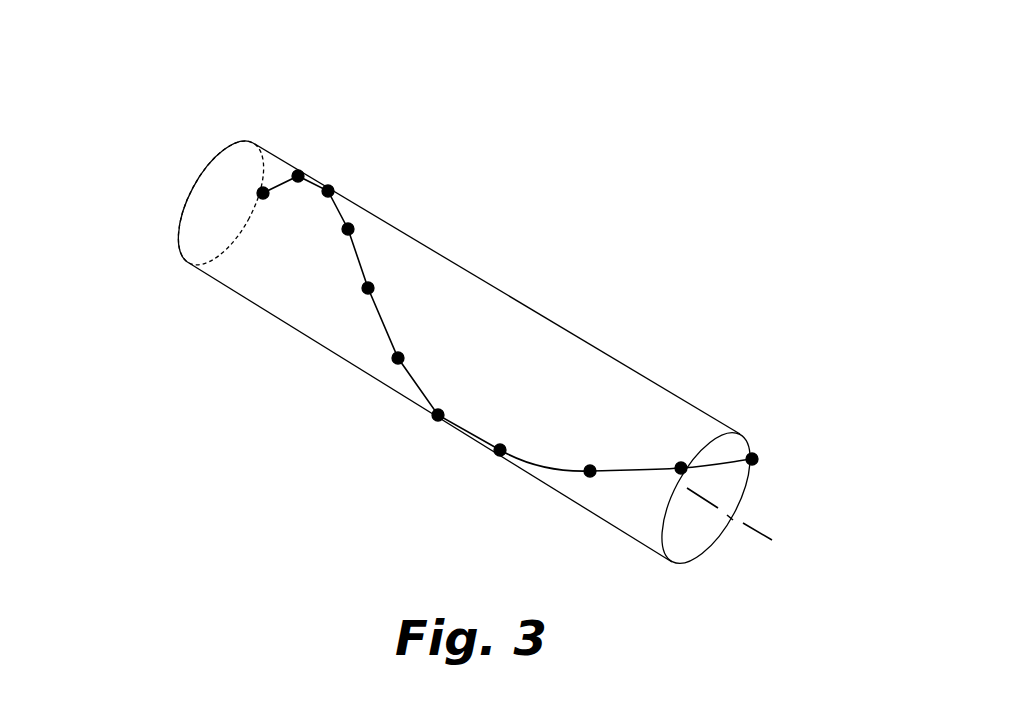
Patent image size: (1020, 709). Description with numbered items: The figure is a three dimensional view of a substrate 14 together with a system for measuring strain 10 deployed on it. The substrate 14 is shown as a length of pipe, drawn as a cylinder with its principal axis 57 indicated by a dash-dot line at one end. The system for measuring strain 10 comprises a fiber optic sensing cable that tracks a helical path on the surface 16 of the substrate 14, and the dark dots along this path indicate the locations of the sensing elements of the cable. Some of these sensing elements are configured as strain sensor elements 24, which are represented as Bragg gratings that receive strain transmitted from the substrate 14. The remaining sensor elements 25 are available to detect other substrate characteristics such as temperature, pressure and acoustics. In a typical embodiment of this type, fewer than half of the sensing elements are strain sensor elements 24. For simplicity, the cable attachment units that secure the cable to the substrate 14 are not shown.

The system for measuring strain 10 is at (148, 101).
The substrate 14 is at (617, 359).
The surface 16 is at (490, 372).
The strain sensor elements 24 is at (354, 213).
The sensor elements 25 is at (298, 176).
The principal axis 57 is at (757, 527).